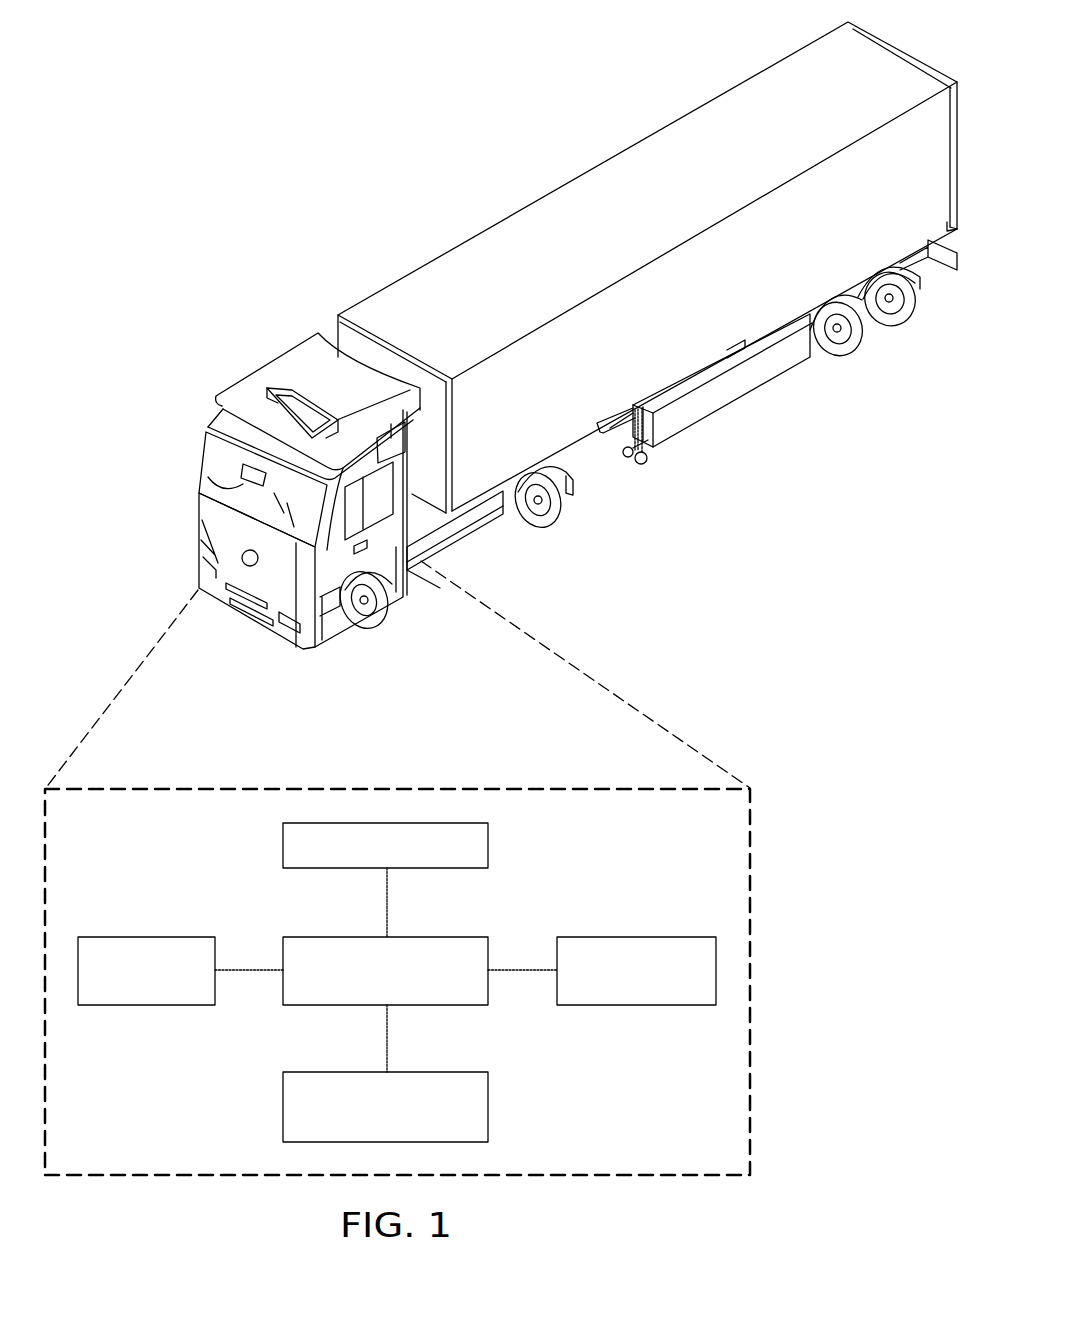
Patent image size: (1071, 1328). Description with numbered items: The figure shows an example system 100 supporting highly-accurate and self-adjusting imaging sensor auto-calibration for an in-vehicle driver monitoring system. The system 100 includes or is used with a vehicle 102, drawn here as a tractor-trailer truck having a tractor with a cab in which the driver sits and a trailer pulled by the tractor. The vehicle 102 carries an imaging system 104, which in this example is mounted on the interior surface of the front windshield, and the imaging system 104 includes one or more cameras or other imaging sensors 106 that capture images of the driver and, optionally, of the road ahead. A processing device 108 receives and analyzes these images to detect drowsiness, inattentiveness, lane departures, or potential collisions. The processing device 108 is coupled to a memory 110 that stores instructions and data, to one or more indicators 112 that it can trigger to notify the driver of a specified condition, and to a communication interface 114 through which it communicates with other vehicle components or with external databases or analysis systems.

The system 100 is at (418, 100).
The vehicle 102 is at (262, 370).
The imaging system 104 is at (210, 481).
The imaging sensor 106 is at (147, 1006).
The processing device 108 is at (435, 1006).
The memory 110 is at (283, 848).
The indicator 112 is at (636, 1006).
The communication interface 114 is at (283, 1107).